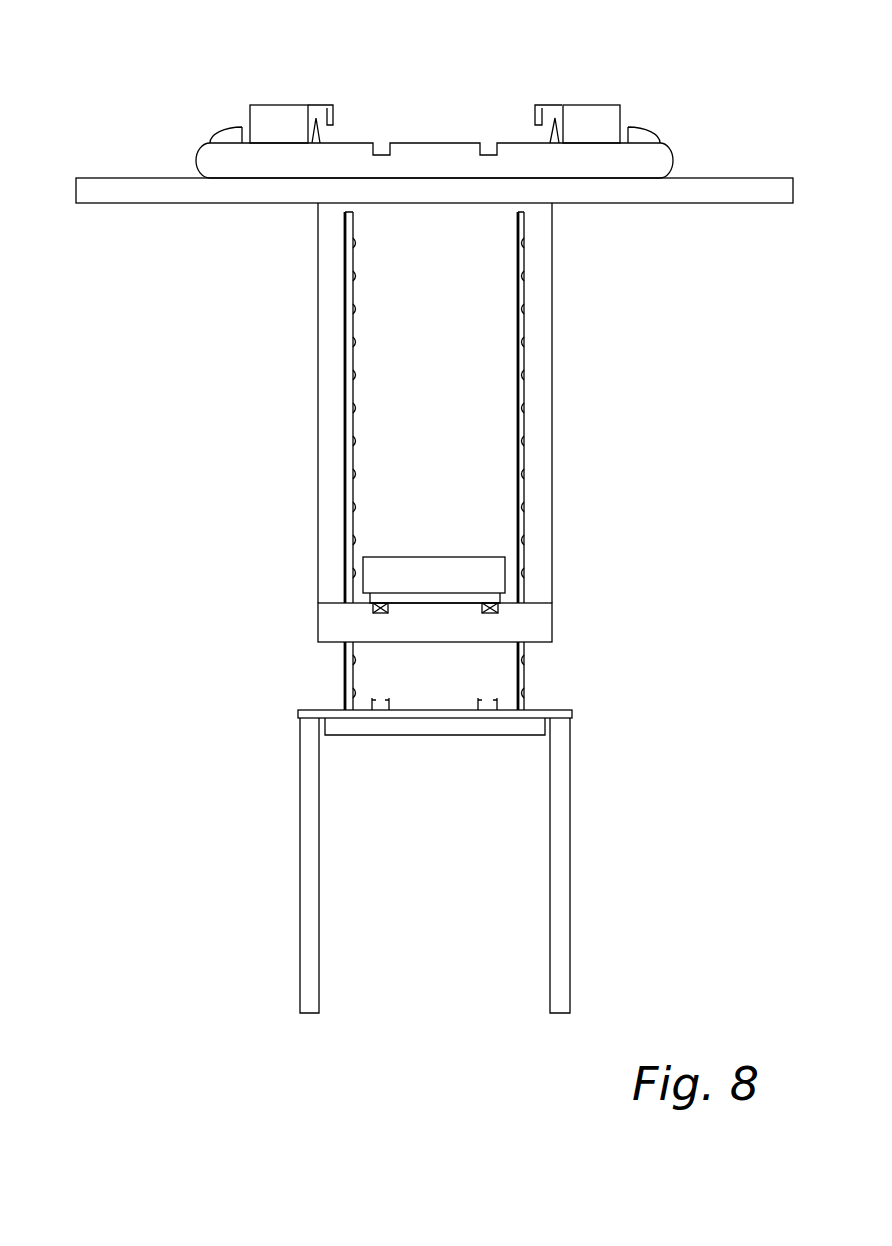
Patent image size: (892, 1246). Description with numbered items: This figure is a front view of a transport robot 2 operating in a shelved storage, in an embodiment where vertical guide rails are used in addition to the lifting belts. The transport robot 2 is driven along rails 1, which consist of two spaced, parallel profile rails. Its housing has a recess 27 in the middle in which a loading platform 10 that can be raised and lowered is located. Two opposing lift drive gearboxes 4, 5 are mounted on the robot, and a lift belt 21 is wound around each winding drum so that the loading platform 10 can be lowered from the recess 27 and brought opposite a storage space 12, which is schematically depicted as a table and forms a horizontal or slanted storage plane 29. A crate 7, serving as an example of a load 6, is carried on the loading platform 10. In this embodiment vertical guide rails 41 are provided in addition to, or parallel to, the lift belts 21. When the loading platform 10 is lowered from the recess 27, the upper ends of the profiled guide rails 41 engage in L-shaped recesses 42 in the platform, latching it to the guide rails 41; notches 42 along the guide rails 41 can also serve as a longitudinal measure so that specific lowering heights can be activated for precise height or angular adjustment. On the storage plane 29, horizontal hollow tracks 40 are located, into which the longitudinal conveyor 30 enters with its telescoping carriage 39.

The rails 1 is at (710, 190).
The transport robot 2 is at (456, 96).
The lift drive gearbox 4 is at (580, 115).
The lift drive gearbox 5 is at (270, 117).
The recess 27 is at (348, 160).
The lift belt 21 is at (318, 460).
The vertical guide rails 41 is at (428, 461).
The L-shaped recesses 42 is at (521, 304).
The loading platform 10 is at (537, 628).
The load 6 is at (434, 544).
The crate 7 is at (410, 563).
The longitudinal conveyor 30 is at (436, 646).
The telescoping carriage 39 is at (490, 614).
The storage space 12 is at (501, 830).
The storage plane 29 is at (543, 710).
The horizontal hollow tracks 40 is at (488, 712).